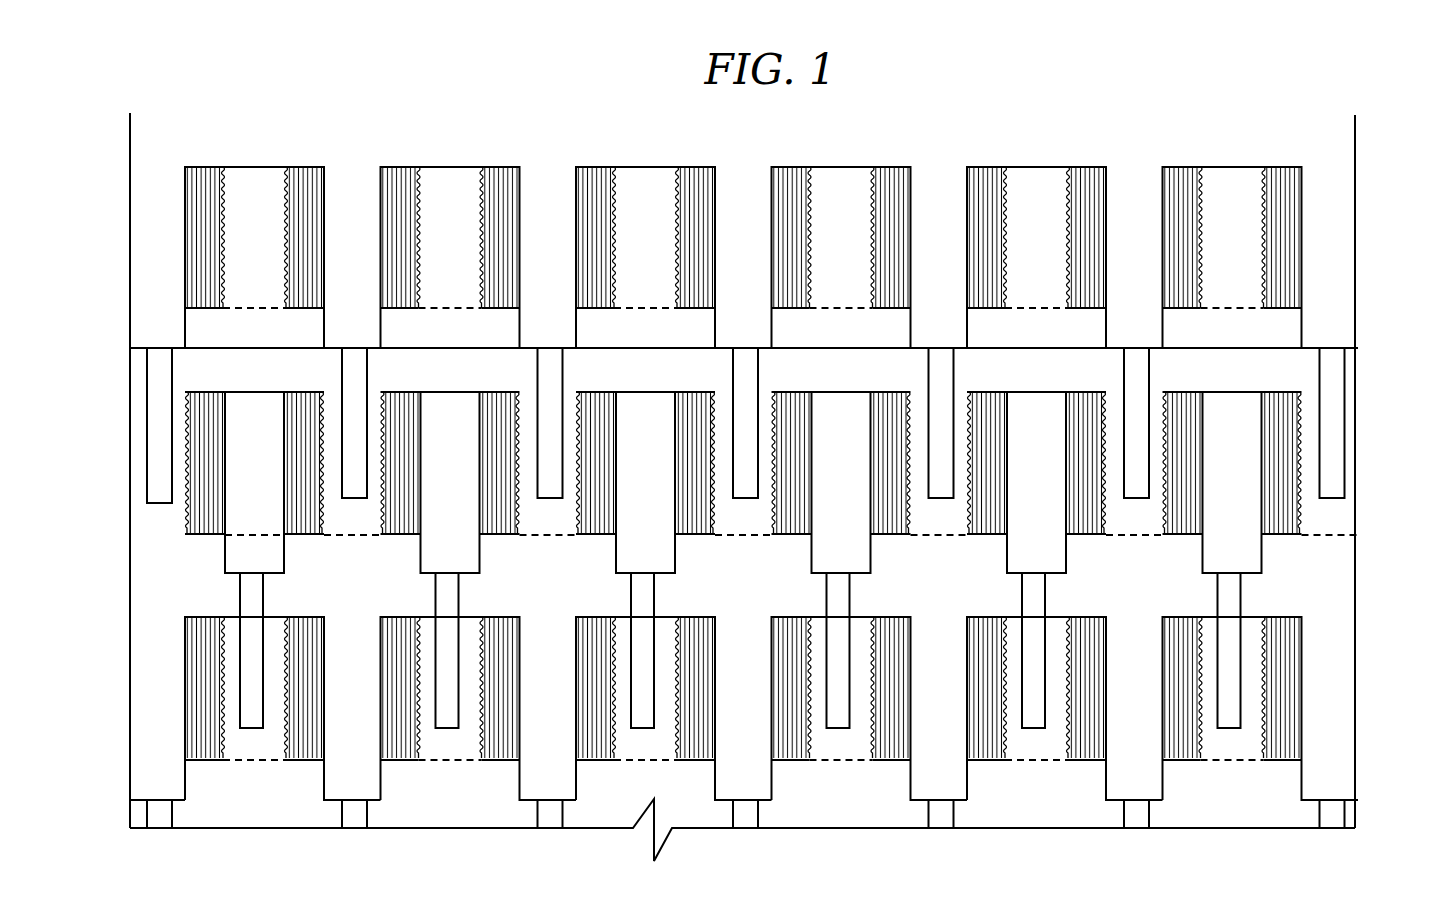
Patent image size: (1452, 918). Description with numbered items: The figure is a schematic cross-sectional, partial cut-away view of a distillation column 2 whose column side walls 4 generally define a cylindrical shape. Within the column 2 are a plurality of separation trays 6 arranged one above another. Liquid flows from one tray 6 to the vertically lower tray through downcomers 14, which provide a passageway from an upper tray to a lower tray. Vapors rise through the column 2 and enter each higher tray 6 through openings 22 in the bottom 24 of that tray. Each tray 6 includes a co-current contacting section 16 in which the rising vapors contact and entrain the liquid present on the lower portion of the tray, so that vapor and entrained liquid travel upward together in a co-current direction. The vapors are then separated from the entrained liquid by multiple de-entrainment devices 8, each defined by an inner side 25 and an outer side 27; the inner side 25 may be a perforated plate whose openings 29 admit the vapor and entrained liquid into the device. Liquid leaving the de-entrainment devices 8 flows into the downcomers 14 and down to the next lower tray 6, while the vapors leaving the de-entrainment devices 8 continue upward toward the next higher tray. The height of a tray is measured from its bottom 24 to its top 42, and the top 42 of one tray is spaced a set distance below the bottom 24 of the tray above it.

The distillation column 2 is at (1376, 183).
The column side walls 4 is at (130, 262).
The separation trays 6 is at (163, 616).
The de-entrainment devices 8 is at (497, 428).
The downcomers 14 is at (540, 372).
The co-current contacting sections 16 is at (535, 527).
The openings 22 is at (666, 312).
The bottom 24 is at (792, 312).
The inner side 25 is at (383, 408).
The outer side 27 is at (382, 645).
The openings 29 is at (382, 494).
The top 42 is at (1186, 396).